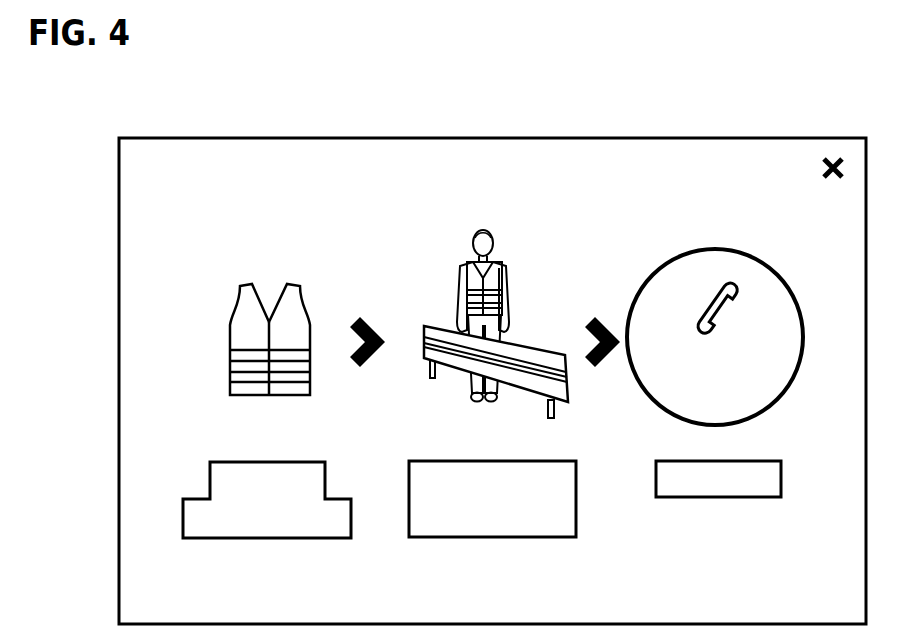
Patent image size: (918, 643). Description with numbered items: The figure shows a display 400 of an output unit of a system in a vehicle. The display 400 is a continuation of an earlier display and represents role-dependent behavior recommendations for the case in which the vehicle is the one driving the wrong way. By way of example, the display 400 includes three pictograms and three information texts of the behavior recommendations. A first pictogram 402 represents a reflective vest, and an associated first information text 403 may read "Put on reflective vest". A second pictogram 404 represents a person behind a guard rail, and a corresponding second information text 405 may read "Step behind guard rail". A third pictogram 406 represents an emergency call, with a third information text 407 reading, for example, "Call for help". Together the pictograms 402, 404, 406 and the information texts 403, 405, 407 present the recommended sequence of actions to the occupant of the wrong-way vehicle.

The display 400 is at (208, 126).
The first pictogram 402 is at (252, 289).
The first information text 403 is at (267, 528).
The second pictogram 404 is at (438, 332).
The second information text 405 is at (496, 528).
The third pictogram 406 is at (660, 272).
The third information text 407 is at (718, 488).